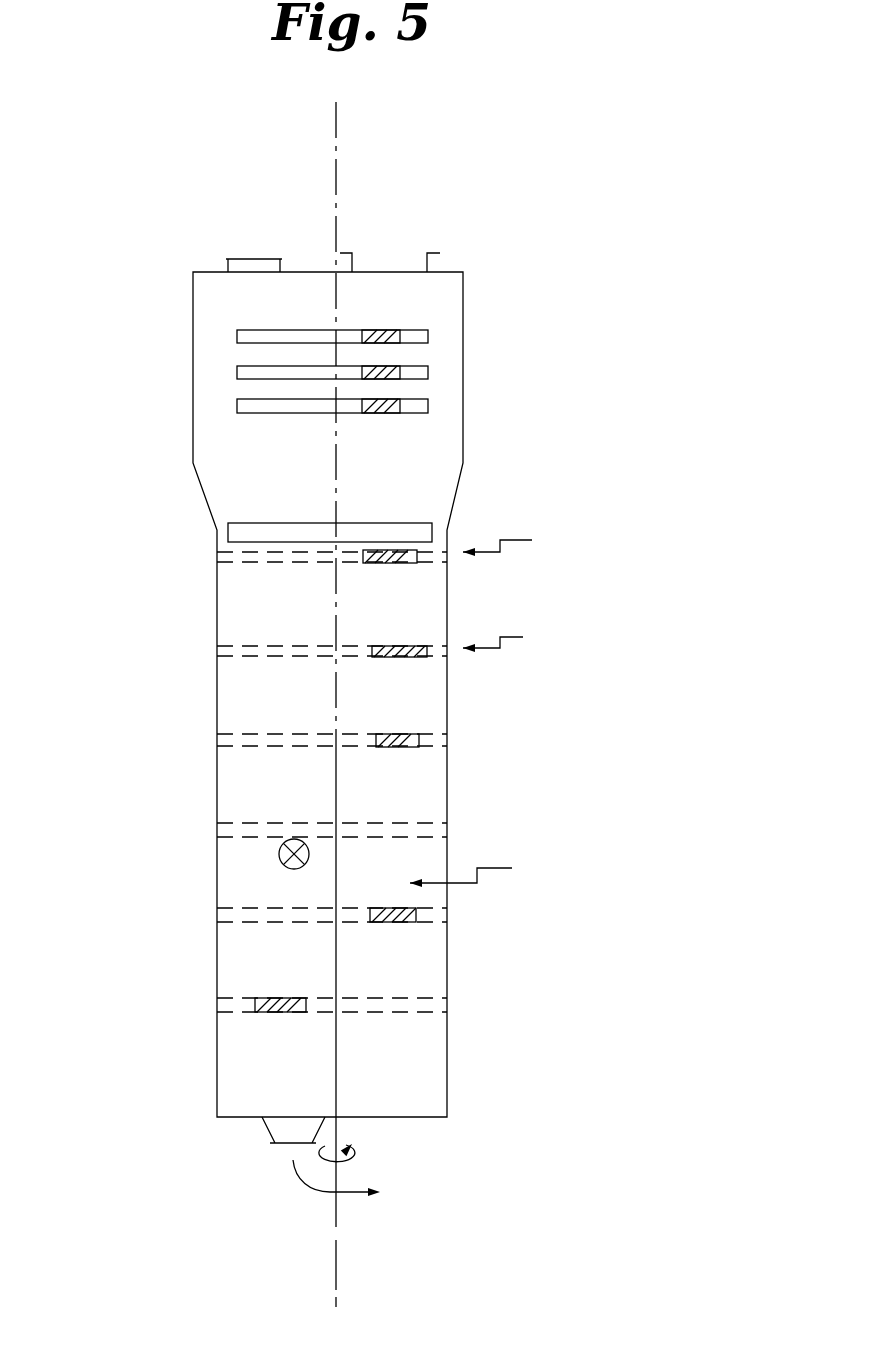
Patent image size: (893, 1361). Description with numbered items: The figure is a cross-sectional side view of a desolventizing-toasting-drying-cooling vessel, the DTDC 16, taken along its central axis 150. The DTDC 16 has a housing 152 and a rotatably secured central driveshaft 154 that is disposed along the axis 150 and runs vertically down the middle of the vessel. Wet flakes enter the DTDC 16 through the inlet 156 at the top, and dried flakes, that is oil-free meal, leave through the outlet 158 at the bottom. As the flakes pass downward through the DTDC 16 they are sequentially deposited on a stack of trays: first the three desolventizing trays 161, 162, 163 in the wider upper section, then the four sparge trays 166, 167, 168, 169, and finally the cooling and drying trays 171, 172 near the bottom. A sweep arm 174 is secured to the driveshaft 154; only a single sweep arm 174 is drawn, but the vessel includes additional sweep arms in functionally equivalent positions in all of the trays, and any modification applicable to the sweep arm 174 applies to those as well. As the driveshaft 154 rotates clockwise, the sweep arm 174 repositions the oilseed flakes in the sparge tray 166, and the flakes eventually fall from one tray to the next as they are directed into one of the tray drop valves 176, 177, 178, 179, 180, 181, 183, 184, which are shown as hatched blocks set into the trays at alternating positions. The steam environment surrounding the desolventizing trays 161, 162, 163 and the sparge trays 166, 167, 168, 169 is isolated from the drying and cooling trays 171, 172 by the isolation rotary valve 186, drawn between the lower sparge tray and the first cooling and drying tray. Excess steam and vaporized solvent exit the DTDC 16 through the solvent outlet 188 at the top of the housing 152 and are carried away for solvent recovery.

The DTDC 16 is at (327, 616).
The axis 150 is at (336, 160).
The housing 152 is at (463, 340).
The central driveshaft 154 is at (337, 800).
The inlet 156 is at (257, 253).
The outlet 158 is at (270, 1152).
The desolventizing tray 161 is at (237, 336).
The desolventizing tray 162 is at (237, 372).
The desolventizing tray 163 is at (237, 405).
The sparge tray 166 is at (217, 552).
The sparge tray 167 is at (217, 648).
The sparge tray 168 is at (217, 735).
The sparge tray 169 is at (217, 823).
The cooling and drying tray 171 is at (217, 916).
The cooling and drying tray 172 is at (217, 1005).
The sweep arm 174 is at (418, 533).
The tray drop valve 176 is at (364, 330).
The tray drop valve 177 is at (393, 379).
The tray drop valve 178 is at (388, 413).
The tray drop valve 179 is at (390, 565).
The tray drop valve 180 is at (400, 658).
The tray drop valve 181 is at (395, 748).
The tray drop valve 183 is at (395, 922).
The tray drop valve 184 is at (273, 1017).
The isolation rotary valve 186 is at (280, 852).
The solvent outlet 188 is at (373, 253).